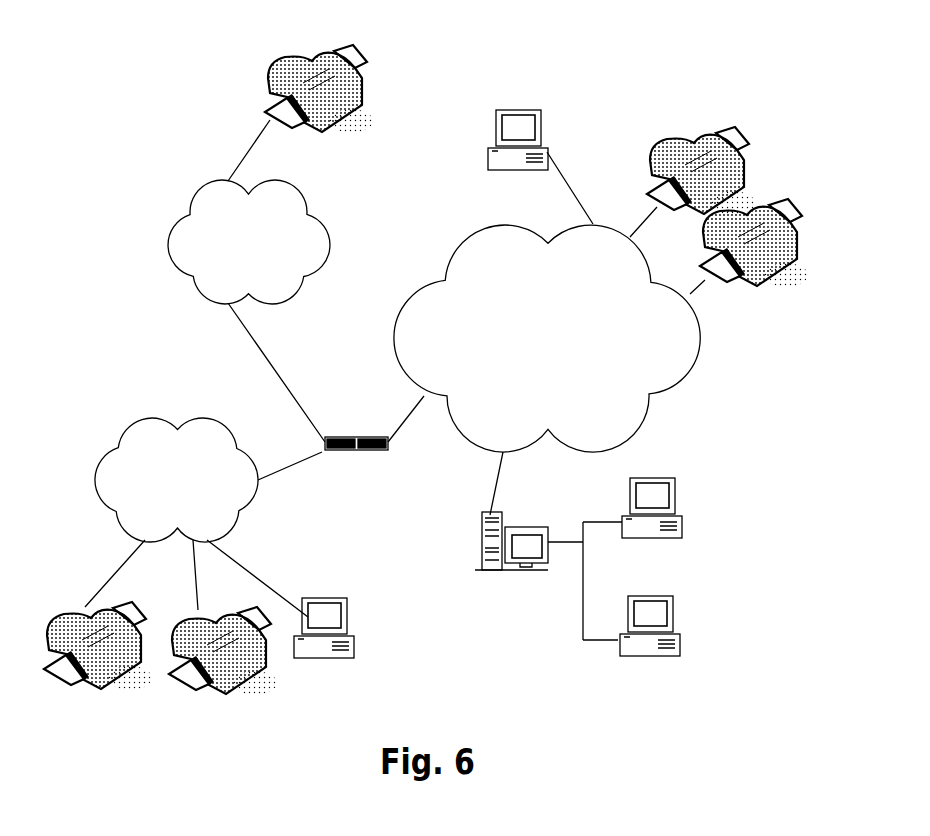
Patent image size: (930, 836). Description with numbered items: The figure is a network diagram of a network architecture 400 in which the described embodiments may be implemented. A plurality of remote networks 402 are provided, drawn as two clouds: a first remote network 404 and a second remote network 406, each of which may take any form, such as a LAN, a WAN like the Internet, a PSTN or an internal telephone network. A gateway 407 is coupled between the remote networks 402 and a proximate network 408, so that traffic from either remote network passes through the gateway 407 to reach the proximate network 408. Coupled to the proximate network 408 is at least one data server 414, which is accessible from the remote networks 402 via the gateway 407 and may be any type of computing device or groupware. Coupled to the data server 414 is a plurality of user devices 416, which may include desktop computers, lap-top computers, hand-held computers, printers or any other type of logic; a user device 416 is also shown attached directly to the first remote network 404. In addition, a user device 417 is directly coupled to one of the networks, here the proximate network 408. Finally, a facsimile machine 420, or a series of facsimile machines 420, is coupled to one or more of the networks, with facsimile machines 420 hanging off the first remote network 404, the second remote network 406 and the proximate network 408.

The network architecture 400 is at (176, 67).
The remote networks 402 is at (135, 302).
The first remote network 404 is at (125, 440).
The second remote network 406 is at (313, 213).
The gateway 407 is at (327, 450).
The proximate network 408 is at (700, 399).
The data server 414 is at (490, 575).
The user devices 416 is at (355, 622).
The user device 417 is at (540, 130).
The facsimile machine 420 is at (365, 68).